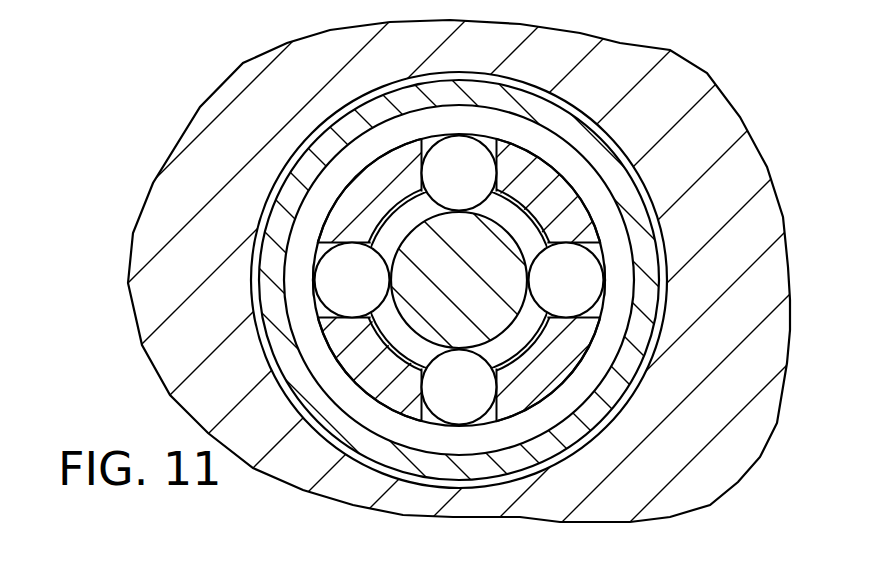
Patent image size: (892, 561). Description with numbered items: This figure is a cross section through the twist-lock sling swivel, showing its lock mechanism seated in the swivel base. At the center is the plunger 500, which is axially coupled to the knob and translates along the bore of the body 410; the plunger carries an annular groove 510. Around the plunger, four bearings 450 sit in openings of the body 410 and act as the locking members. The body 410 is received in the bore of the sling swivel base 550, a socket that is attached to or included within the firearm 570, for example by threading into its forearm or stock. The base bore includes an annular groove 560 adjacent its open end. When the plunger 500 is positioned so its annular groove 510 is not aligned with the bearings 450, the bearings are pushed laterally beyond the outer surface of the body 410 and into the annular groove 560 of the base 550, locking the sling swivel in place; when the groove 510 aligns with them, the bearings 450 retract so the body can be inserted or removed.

The body 410 is at (446, 280).
The bearings 450 is at (460, 158).
The plunger 500 is at (637, 178).
The annular groove 510 is at (368, 242).
The sling swivel base 550 is at (617, 417).
The annular groove 560 is at (636, 285).
The firearm 570 is at (233, 113).